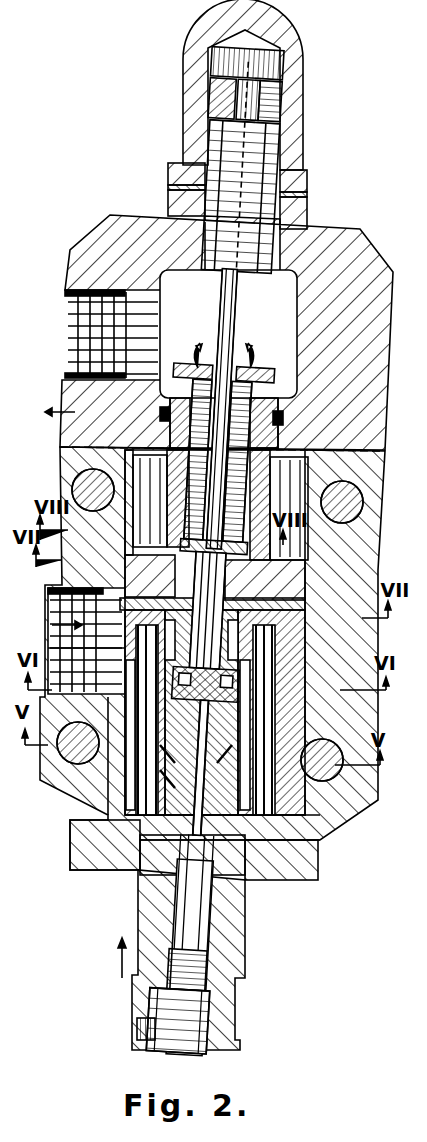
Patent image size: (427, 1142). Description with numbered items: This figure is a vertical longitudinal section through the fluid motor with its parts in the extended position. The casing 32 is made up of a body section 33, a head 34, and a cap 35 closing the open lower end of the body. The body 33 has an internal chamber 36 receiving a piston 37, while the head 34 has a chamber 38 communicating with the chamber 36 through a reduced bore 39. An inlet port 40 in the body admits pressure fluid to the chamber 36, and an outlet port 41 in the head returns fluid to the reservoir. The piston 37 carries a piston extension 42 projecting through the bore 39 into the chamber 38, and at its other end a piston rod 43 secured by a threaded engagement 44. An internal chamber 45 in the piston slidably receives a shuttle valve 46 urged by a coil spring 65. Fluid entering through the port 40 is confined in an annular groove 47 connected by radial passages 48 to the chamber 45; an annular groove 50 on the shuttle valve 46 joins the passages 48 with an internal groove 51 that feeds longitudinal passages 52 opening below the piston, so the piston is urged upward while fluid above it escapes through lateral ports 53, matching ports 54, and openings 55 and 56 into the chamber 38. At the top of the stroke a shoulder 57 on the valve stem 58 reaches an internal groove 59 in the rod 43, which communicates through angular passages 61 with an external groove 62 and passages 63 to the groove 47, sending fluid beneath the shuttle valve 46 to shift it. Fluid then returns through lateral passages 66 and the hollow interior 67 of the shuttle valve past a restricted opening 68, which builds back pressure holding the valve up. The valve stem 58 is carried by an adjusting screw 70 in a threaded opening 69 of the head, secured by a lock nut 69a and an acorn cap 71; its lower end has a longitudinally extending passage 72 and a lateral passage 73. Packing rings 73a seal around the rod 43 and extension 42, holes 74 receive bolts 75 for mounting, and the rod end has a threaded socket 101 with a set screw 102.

The acorn cap 71 is at (290, 103).
The adjusting screw 70 is at (255, 160).
The lock nut 69a is at (306, 205).
The threaded opening 69 is at (262, 247).
The outlet port 41 is at (80, 305).
The opening 55 is at (188, 340).
The opening 56 is at (260, 343).
The valve stem 58 is at (243, 312).
The chamber 38 is at (297, 325).
The reduced bore 39 is at (285, 415).
The head 34 is at (380, 405).
The piston extension 42 is at (278, 440).
The packing rings 73a is at (162, 410).
The coil spring 65 is at (160, 440).
The casing 32 is at (60, 455).
The matching ports 54 is at (150, 501).
The internal chamber 45 is at (289, 508).
The internal chamber 36 is at (300, 483).
The lateral ports 53 is at (128, 545).
The body section 33 is at (370, 538).
The piston 37 is at (290, 575).
The shuttle valve 46 is at (175, 580).
The radial passages 48 is at (115, 600).
The hollow interior 67 is at (228, 603).
The inlet port 40 is at (215, 640).
The annular groove 50 is at (268, 630).
The internal groove 51 is at (140, 648).
The restricted opening 68 is at (220, 660).
The lateral passages 66 is at (215, 680).
The annular groove 47 is at (268, 695).
The shoulder 57 is at (140, 707).
The threaded engagement 44 is at (220, 740).
The lateral passage 73 is at (196, 758).
The holes 74 is at (78, 743).
The bolts 75 is at (110, 770).
The external groove 62 is at (118, 790).
The passages 63 is at (290, 815).
The passages 52 is at (105, 822).
The angular passages 61 is at (105, 845).
The internal groove 59 is at (285, 840).
The cap 35 is at (318, 862).
The longitudinally extending passage 72 is at (180, 875).
The piston rod 43 is at (240, 917).
The set screw 102 is at (140, 1033).
The threaded socket 101 is at (220, 1033).